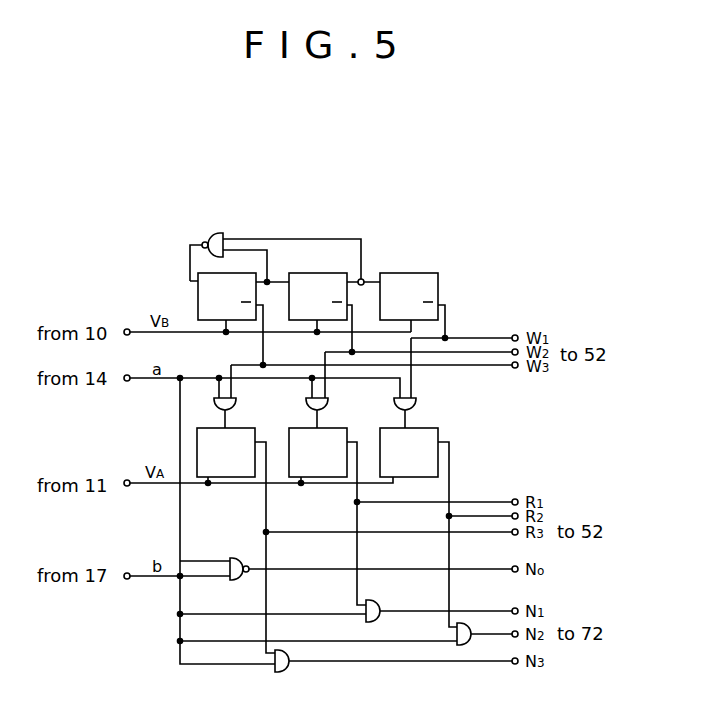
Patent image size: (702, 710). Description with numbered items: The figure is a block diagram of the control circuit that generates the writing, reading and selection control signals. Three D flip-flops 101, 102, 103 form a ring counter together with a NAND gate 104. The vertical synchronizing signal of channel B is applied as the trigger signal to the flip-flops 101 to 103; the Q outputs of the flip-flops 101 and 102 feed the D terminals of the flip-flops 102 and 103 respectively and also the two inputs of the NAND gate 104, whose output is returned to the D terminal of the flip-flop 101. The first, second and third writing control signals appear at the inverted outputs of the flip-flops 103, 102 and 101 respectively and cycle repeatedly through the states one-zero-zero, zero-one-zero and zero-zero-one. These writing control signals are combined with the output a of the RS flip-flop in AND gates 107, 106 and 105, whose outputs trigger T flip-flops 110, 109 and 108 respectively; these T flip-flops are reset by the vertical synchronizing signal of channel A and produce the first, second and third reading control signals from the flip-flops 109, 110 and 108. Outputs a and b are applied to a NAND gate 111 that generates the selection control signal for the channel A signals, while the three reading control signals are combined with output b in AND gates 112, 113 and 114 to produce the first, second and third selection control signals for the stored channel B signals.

The D flip-flop 101 is at (198, 290).
The D flip-flop 102 is at (318, 273).
The D flip-flop 103 is at (425, 273).
The NAND gate 104 is at (222, 234).
The AND gate 105 is at (236, 405).
The AND gate 106 is at (328, 405).
The AND gate 107 is at (416, 405).
The T flip-flop 108 is at (257, 414).
The T flip-flop 109 is at (349, 414).
The T flip-flop 110 is at (438, 433).
The NAND gate 111 is at (236, 580).
The AND gate 112 is at (380, 608).
The AND gate 113 is at (457, 630).
The AND gate 114 is at (297, 668).